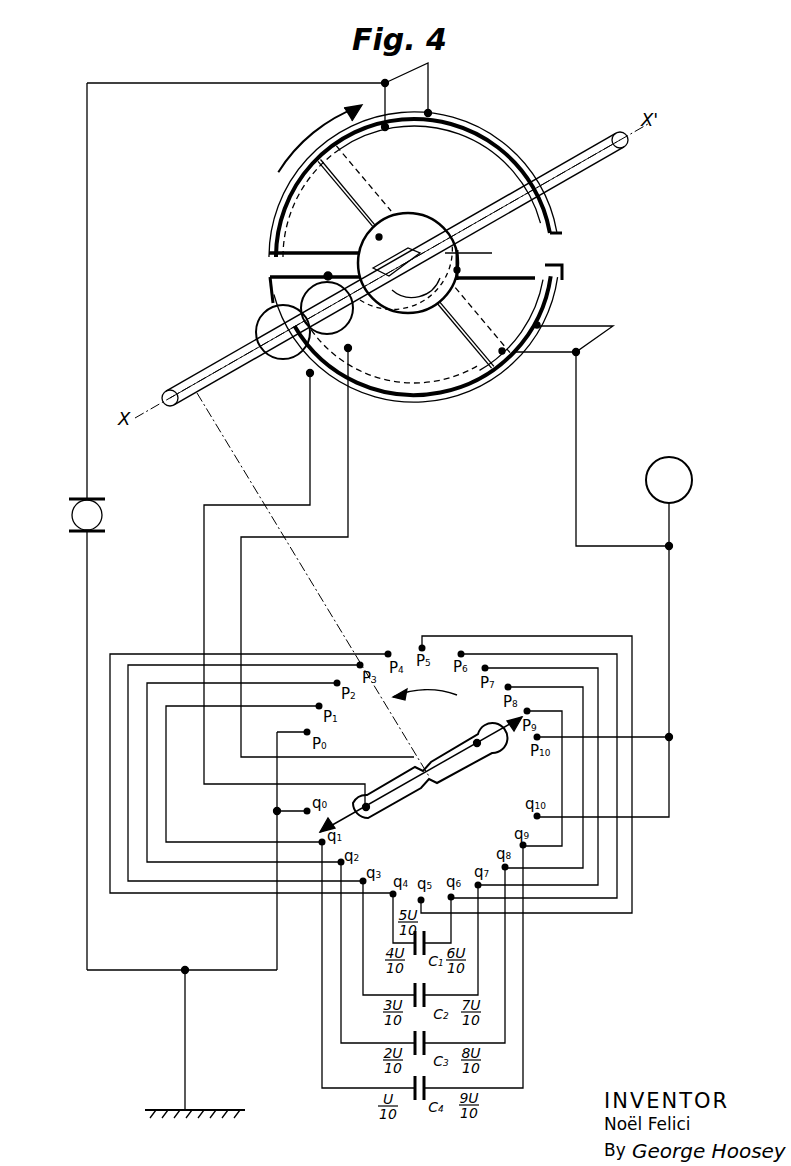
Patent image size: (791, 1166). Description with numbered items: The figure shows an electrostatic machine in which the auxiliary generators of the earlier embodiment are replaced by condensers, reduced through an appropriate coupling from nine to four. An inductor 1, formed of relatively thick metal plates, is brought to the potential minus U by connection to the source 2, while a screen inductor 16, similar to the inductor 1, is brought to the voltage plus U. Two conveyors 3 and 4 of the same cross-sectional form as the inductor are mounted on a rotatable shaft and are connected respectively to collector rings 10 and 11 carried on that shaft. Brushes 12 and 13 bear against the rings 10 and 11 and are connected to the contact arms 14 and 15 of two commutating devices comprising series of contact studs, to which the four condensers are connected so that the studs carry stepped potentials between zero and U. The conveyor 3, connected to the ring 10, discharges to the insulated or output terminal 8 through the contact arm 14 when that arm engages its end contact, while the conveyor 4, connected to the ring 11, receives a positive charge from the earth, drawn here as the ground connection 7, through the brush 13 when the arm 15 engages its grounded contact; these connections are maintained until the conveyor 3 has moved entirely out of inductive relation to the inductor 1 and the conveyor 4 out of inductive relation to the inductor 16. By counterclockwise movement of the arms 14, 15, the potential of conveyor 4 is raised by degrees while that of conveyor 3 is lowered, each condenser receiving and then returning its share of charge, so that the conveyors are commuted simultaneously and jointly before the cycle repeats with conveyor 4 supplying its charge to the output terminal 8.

The inductor 1 is at (548, 238).
The source 2 is at (103, 527).
The conveyor 3 is at (540, 298).
The conveyor 4 is at (283, 265).
The ground connection 7 is at (190, 1112).
The insulated or output terminal 8 is at (629, 584).
The collector ring 10 is at (310, 293).
The collector ring 11 is at (258, 328).
The brush 12 is at (348, 350).
The brush 13 is at (310, 373).
The contact arm 14 is at (477, 743).
The contact arm 15 is at (366, 807).
The screen inductor 16 is at (513, 357).